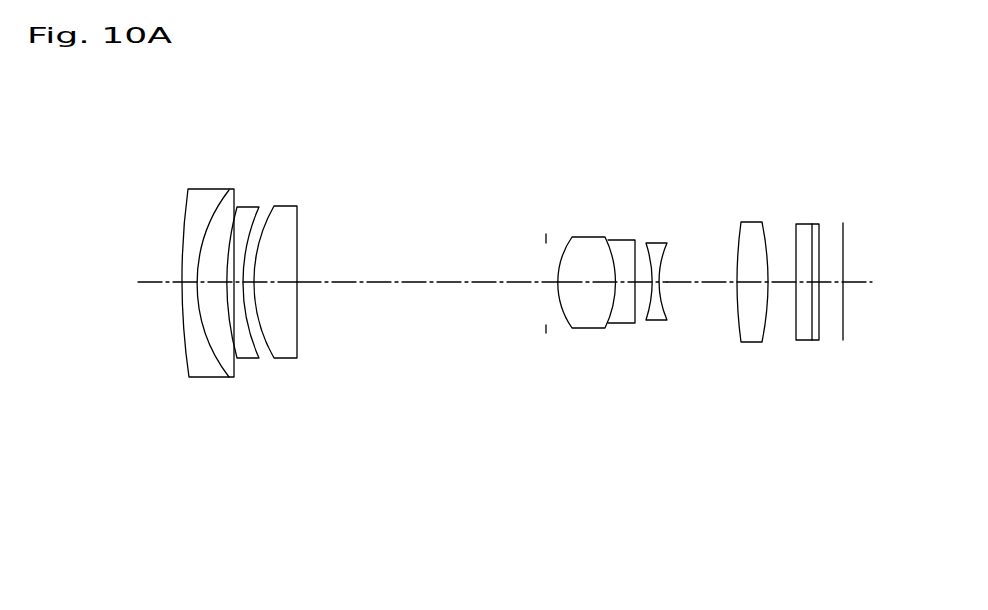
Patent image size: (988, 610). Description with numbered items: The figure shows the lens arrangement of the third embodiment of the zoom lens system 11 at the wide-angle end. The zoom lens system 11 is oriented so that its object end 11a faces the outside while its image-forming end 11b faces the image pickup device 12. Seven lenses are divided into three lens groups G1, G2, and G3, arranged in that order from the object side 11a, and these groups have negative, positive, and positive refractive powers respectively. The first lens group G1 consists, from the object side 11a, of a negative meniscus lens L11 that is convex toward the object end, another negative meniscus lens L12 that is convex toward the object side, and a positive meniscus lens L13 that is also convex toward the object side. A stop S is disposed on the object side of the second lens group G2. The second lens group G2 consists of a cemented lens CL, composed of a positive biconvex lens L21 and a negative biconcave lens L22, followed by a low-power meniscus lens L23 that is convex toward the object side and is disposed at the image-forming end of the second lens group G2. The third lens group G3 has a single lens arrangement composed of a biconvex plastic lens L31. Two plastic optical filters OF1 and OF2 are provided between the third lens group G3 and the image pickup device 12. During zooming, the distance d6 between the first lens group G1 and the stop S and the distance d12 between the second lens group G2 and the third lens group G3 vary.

The zoom lens system 11 is at (738, 142).
The object end 11a is at (152, 203).
The image-forming end 11b is at (815, 202).
The image pickup device 12 is at (843, 257).
The first lens group G1 is at (287, 609).
The second lens group G2 is at (537, 609).
The third lens group G3 is at (750, 609).
The negative meniscus lens L11 is at (210, 206).
The negative meniscus lens L12 is at (243, 218).
The positive meniscus lens L13 is at (282, 217).
The positive biconvex lens L21 is at (587, 240).
The negative biconcave lens L22 is at (616, 245).
The low-power meniscus lens L23 is at (655, 245).
The biconvex plastic lens L31 is at (750, 230).
The cemented lens CL is at (652, 163).
The stop S is at (546, 237).
The distance between the first lens group and the stop d6 is at (430, 282).
The distance between the second lens group and the third lens group d12 is at (713, 282).
The optical filter OF1 is at (802, 332).
The optical filter OF2 is at (816, 332).